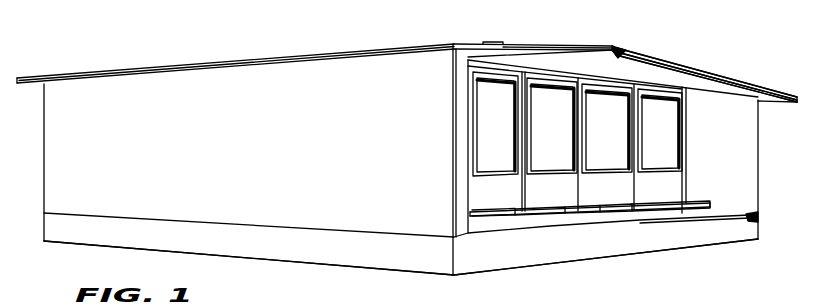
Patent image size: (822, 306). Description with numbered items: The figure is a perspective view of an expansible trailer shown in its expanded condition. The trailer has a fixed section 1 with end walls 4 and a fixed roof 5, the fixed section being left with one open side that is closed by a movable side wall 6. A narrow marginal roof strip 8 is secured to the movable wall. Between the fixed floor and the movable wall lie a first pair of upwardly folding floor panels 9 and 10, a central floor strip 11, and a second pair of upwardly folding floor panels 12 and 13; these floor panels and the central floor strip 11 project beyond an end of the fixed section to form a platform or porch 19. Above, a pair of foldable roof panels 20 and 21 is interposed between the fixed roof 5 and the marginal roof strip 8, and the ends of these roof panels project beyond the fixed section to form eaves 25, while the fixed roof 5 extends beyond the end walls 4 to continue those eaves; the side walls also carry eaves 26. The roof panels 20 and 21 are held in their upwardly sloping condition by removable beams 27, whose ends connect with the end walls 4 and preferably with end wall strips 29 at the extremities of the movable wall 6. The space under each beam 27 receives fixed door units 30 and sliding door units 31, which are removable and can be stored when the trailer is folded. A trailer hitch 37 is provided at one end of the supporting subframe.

The fixed section 1 is at (754, 129).
The end walls 4 is at (737, 166).
The fixed roof 5 is at (724, 82).
The movable side wall 6 is at (397, 222).
The roof strip 8 is at (491, 43).
The floor panel 9 is at (668, 203).
The floor panel 10 is at (625, 205).
The central floor strip 11 is at (598, 204).
The floor panel 12 is at (563, 207).
The floor panel 13 is at (513, 207).
The platform or porch 19 is at (552, 221).
The roof panel 20 is at (646, 58).
The roof panel 21 is at (558, 47).
The eaves 25 is at (618, 54).
The eaves 26 is at (398, 48).
The removable beams 27 is at (536, 62).
The end wall strips 29 is at (462, 145).
The fixed door units 30 is at (577, 124).
The sliding door units 31 is at (579, 126).
The trailer hitch 37 is at (742, 221).